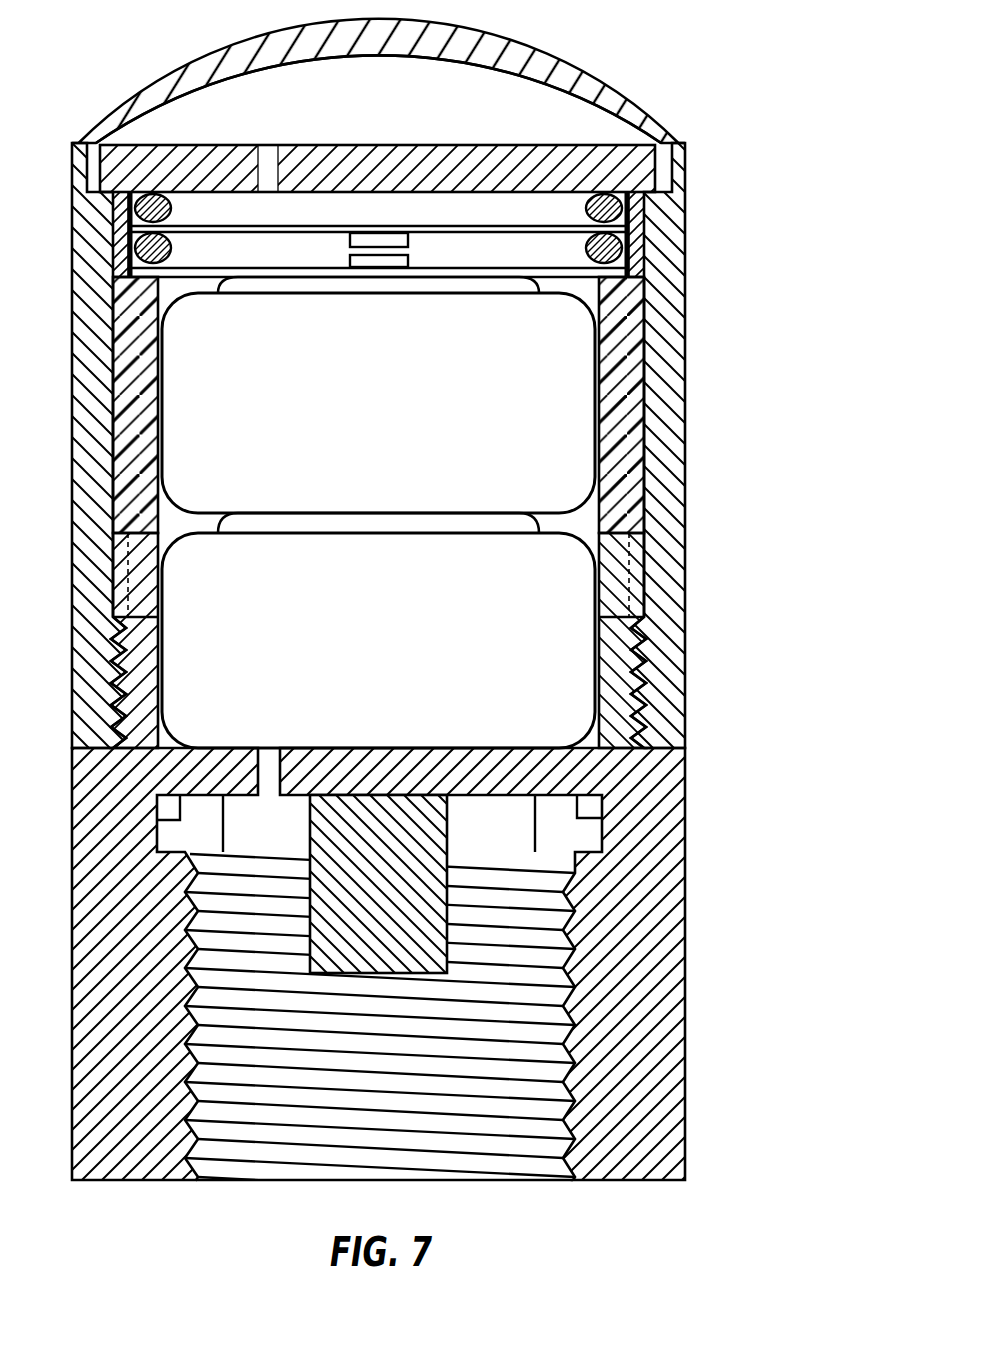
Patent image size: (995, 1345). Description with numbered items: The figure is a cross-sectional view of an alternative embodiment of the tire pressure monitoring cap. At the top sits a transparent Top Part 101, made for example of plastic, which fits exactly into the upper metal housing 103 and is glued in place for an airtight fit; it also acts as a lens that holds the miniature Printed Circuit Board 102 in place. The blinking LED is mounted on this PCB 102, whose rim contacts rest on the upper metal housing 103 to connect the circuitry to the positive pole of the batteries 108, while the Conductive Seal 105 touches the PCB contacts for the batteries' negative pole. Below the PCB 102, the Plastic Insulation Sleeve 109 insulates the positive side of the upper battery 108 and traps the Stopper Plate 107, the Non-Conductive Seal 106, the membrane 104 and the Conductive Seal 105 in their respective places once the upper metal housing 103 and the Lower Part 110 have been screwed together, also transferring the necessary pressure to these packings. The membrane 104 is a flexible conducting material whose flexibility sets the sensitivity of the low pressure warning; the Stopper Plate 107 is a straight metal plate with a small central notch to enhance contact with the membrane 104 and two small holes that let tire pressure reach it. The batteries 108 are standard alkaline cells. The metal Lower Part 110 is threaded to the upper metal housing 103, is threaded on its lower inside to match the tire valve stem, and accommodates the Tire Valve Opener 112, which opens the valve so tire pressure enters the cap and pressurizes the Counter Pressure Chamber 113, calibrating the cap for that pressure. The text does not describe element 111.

The Top Part 101 is at (633, 110).
The Printed Circuit Board 102 is at (637, 163).
The upper metal housing 103 is at (665, 450).
The membrane 104 is at (620, 245).
The Conductive Seal 105 is at (618, 222).
The Non-Conductive Seal 106 is at (635, 245).
The Stopper Plate 107 is at (672, 288).
The batteries 108 is at (575, 433).
The Plastic Insulation Sleeve 109 is at (628, 512).
The Lower Part 110 is at (668, 1085).
The pocket 111 is at (212, 838).
The Tire Valve Opener 112 is at (438, 838).
The Counter Pressure Chamber 113 is at (517, 108).